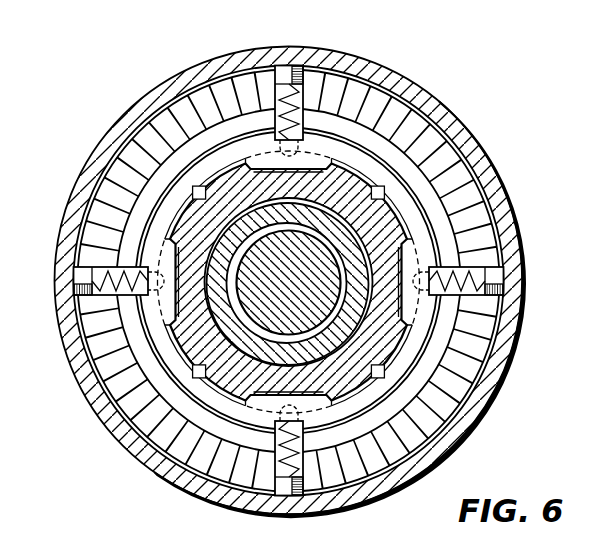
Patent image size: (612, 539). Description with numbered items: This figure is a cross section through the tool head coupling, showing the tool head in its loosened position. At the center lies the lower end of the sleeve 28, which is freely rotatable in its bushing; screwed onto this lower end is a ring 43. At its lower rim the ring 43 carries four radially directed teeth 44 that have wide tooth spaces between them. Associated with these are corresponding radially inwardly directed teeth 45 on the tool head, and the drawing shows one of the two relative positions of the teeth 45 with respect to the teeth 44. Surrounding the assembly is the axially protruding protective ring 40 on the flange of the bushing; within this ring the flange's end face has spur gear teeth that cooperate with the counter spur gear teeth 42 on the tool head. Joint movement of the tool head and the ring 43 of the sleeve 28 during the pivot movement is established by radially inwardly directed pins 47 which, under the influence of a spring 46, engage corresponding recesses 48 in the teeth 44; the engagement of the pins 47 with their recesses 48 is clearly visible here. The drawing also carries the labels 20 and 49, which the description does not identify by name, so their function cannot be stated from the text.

The shaft 20 is at (250, 268).
The sleeve 28 is at (143, 460).
The protective ring 40 is at (500, 205).
The counter spur gear teeth 42 is at (423, 132).
The ring 43 is at (197, 333).
The radially directed teeth 44 is at (100, 401).
The radially inwardly directed teeth 45 is at (173, 320).
The spring 46 is at (305, 97).
The pins 47 is at (450, 252).
The recesses 48 is at (395, 174).
The adjusting screw 49 is at (297, 65).